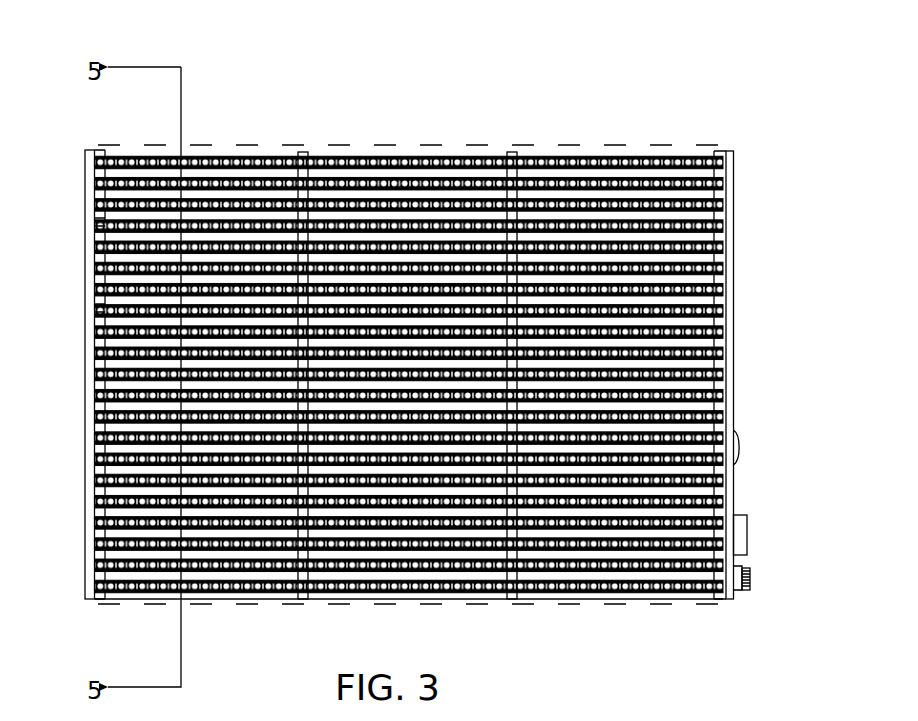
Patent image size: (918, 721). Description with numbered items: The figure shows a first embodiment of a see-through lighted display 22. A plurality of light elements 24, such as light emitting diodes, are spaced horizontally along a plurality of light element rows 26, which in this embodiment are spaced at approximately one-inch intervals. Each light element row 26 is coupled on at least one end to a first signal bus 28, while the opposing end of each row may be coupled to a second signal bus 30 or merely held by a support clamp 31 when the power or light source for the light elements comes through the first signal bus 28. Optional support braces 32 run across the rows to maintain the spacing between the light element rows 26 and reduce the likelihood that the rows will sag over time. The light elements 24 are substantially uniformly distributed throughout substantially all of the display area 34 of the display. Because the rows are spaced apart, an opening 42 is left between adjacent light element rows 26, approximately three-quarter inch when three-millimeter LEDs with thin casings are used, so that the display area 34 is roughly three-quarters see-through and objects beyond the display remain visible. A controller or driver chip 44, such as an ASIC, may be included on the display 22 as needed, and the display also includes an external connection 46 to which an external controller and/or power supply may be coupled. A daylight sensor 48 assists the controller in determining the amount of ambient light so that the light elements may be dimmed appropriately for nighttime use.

The see-through lighted display 22 is at (634, 82).
The light elements 24 is at (233, 157).
The light element rows 26 is at (95, 422).
The first signal bus 28 is at (727, 152).
The second signal bus 30 is at (93, 150).
The support clamp 31 is at (95, 222).
The support braces 32 is at (303, 152).
The display area 34 is at (162, 604).
The opening 42 is at (643, 174).
The controller or driver chip 44 is at (746, 525).
The external connection 46 is at (745, 570).
The daylight sensor 48 is at (740, 445).